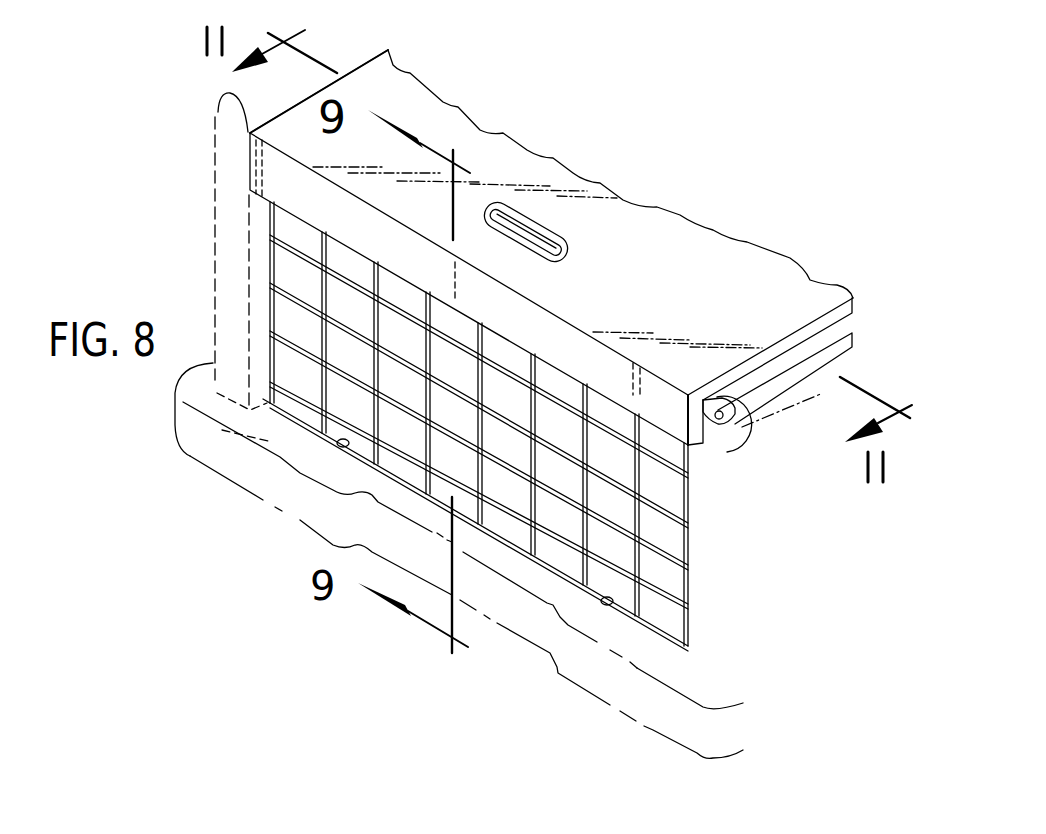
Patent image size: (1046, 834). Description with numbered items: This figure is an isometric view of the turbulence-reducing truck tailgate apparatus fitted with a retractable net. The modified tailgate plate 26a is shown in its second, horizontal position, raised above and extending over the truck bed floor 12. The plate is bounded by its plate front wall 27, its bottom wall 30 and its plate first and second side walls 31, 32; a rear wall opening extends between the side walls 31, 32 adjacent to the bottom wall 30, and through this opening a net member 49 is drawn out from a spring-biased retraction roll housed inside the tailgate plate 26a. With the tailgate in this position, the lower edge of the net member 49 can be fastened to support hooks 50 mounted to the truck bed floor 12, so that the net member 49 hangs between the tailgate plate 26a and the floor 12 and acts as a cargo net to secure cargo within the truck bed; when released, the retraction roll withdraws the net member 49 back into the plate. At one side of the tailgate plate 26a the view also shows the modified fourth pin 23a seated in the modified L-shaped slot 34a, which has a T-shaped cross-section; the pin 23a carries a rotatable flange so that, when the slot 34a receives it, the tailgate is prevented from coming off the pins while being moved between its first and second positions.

The truck bed floor 12 is at (187, 455).
The modified tailgate plate 26a is at (672, 240).
The plate front wall 27 is at (772, 258).
The plate first side wall 31 is at (352, 71).
The bottom wall 30 is at (612, 362).
The modified L-shaped slot 34a is at (782, 367).
The plate second side wall 32 is at (692, 440).
The modified fourth pin 23a is at (733, 427).
The net member 49 is at (505, 370).
The support hooks 50 is at (340, 445).